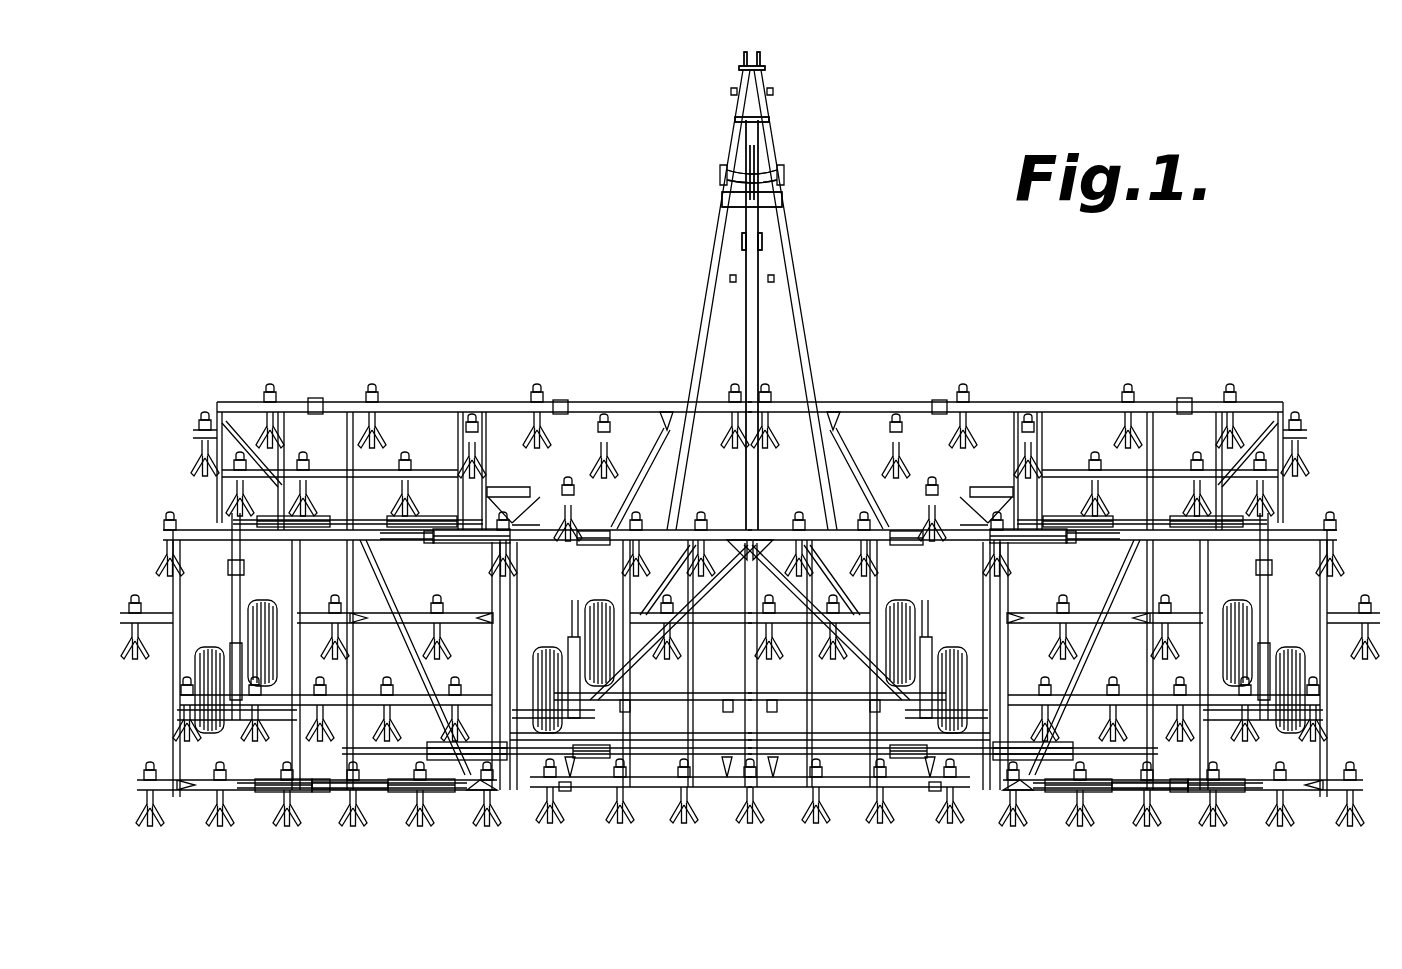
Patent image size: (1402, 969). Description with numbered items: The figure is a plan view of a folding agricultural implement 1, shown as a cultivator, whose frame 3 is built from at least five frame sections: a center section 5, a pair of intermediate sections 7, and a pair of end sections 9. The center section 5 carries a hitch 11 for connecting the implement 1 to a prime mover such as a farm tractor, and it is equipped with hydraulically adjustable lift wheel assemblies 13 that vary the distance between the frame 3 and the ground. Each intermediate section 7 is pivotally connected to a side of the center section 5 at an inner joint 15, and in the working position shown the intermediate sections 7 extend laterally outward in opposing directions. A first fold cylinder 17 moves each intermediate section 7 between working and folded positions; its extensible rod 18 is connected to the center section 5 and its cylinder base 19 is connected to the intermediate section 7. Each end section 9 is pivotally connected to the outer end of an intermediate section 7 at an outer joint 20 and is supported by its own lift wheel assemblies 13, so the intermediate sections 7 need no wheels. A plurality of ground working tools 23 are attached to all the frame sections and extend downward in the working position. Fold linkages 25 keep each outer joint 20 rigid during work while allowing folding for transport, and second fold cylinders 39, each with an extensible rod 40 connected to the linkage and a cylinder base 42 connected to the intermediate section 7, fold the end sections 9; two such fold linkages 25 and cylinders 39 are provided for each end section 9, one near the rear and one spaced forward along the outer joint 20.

The folding agricultural implement 1 is at (657, 172).
The frame 3 is at (215, 497).
The center section 5 is at (608, 400).
The intermediate section 7 is at (410, 400).
The end section 9 is at (232, 400).
The hitch 11 is at (790, 240).
The lift wheel assembly 13 is at (213, 645).
The inner joint 15 is at (550, 398).
The first fold cylinder 17 is at (462, 545).
The extensible rod 18 is at (562, 540).
The cylinder base 19 is at (432, 540).
The outer joint 20 is at (316, 398).
The ground working tool 23 is at (1120, 432).
The fold linkage 25 is at (320, 490).
The second fold cylinder 39 is at (440, 512).
The extensible rod 40 is at (370, 796).
The cylinder base 42 is at (462, 796).